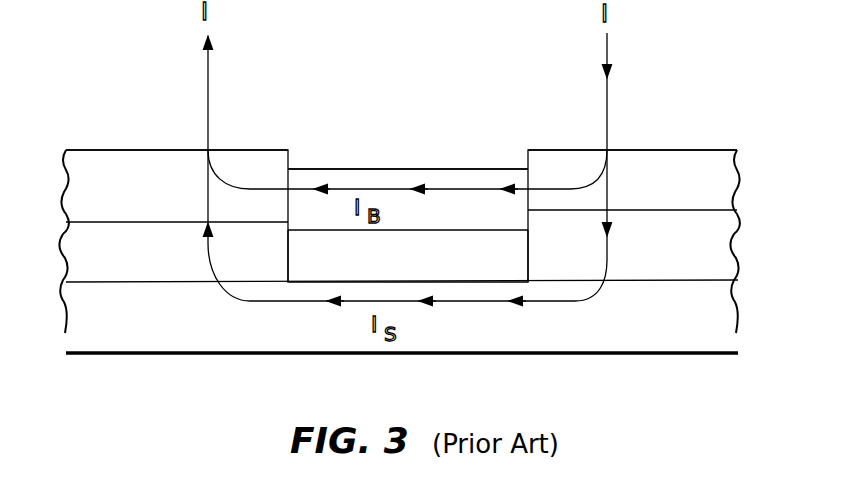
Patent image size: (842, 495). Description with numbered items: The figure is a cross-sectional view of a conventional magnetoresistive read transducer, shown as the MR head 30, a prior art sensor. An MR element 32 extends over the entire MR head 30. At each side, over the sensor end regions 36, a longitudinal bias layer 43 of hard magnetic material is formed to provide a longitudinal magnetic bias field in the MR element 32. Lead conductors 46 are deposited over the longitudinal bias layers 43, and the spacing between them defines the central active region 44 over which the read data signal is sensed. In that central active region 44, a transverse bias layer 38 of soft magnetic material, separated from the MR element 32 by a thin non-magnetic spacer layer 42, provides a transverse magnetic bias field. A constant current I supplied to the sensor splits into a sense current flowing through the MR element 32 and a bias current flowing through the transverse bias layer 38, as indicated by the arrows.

The MR head 30 is at (702, 412).
The MR element 32 is at (738, 320).
The sensor end regions 36 is at (144, 150).
The transverse bias layer 38 is at (458, 208).
The non-magnetic spacer layer 42 is at (490, 263).
The longitudinal bias layer 43 is at (65, 265).
The central active region 44 is at (352, 168).
The lead conductors 46 is at (67, 192).